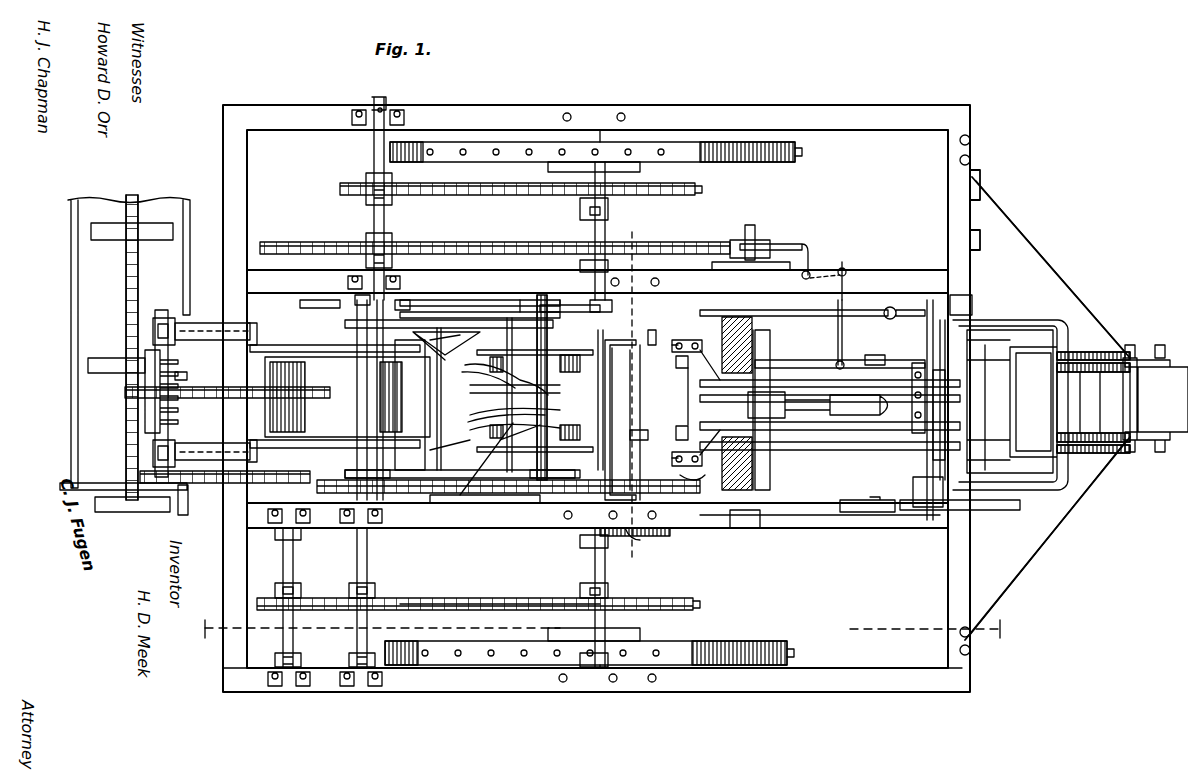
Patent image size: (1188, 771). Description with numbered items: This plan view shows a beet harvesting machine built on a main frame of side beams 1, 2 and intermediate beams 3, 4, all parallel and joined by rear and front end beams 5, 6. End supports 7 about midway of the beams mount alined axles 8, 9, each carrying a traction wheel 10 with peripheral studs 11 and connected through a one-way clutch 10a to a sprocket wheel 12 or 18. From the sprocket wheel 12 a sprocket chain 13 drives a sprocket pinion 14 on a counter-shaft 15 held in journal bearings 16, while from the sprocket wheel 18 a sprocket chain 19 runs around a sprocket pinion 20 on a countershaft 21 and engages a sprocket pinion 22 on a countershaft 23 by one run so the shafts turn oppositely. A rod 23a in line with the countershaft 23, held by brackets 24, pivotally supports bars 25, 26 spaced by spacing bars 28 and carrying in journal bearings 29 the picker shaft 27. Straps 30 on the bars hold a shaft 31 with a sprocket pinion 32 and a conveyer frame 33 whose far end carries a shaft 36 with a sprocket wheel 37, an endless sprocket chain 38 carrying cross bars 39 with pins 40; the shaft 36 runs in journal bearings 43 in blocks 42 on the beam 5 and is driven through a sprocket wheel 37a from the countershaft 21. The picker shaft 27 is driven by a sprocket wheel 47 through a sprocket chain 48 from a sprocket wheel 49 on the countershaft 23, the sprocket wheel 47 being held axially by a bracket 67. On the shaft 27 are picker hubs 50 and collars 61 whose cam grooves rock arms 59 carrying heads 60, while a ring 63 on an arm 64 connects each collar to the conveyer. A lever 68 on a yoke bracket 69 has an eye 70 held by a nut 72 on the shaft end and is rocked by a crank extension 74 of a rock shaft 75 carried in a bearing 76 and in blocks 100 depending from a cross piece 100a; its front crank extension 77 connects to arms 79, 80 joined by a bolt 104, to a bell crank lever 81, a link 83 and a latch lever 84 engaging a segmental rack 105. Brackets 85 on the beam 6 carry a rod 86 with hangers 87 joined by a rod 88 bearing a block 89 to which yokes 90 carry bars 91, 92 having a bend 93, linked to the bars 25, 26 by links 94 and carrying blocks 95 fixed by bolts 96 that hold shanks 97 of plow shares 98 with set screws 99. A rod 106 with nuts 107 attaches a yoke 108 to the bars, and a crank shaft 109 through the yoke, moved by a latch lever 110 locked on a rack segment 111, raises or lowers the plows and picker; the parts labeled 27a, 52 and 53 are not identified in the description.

The side beam 1 is at (858, 118).
The side beam 2 is at (860, 685).
The intermediate beam 3 is at (885, 280).
The intermediate beam 4 is at (845, 530).
The end beam 5 is at (232, 162).
The end beam 6 is at (962, 222).
The end support 7 is at (582, 262).
The axle 8 is at (590, 222).
The axle 9 is at (592, 562).
The traction wheel 10 is at (748, 162).
The one-way clutch 10a is at (612, 160).
The peripheral stud 11 is at (800, 152).
The sprocket wheel 12 is at (700, 190).
The sprocket chain 13 is at (495, 240).
The sprocket pinion 14 is at (338, 190).
The counter-shaft 15 is at (375, 157).
The journal bearing 16 is at (380, 115).
The sprocket wheel 18 is at (698, 600).
The sprocket chain 19 is at (465, 610).
The sprocket pinion 20 is at (255, 602).
The countershaft 21 is at (292, 646).
The sprocket pinion 22 is at (376, 595).
The countershaft 23 is at (362, 632).
The rod 23a is at (360, 345).
The bracket 24 is at (340, 530).
The bar 25 is at (345, 325).
The bar 26 is at (352, 468).
The picker shaft 27 is at (540, 500).
The bearing block 27a is at (285, 510).
The spacing bar 28 is at (362, 340).
The journal bearing 29 is at (560, 310).
The strap 30 is at (435, 336).
The shaft 31 is at (430, 360).
The sprocket pinion 32 is at (435, 425).
The conveyer frame 33 is at (268, 328).
The shaft 36 is at (162, 312).
The sprocket wheel 37 is at (125, 395).
The sprocket wheel 37a is at (170, 495).
The endless sprocket chain 38 is at (340, 400).
The cross bar 39 is at (340, 362).
The pin 40 is at (290, 445).
The block 42 is at (212, 328).
The journal bearing 43 is at (153, 330).
The sprocket wheel 47 is at (575, 488).
The sprocket chain 48 is at (440, 505).
The sprocket wheel 49 is at (348, 470).
The hub 50 is at (570, 330).
The finger 52 is at (480, 430).
The finger 53 is at (510, 428).
The arm 59 is at (560, 390).
The head 60 is at (505, 408).
The collar 61 is at (480, 362).
The ring 63 is at (560, 405).
The arm 64 is at (505, 390).
The bracket 67 is at (528, 500).
The lever 68 is at (492, 310).
The yoke bracket 69 is at (455, 312).
The eye 70 is at (600, 305).
The nut 72 is at (558, 302).
The crank extension 74 is at (352, 290).
The rock shaft 75 is at (522, 300).
The bearing 76 is at (398, 255).
The crank extension 77 is at (830, 310).
The arm 79 is at (835, 322).
The arm 80 is at (843, 322).
The bell crank lever 81 is at (808, 262).
The link 83 is at (788, 248).
The latch lever 84 is at (735, 250).
The bracket 85 is at (950, 300).
The rod 86 is at (928, 290).
The hanger 87 is at (900, 530).
The rod 88 is at (918, 398).
The block 89 is at (933, 440).
The yoke 90 is at (930, 400).
The bar 91 is at (795, 370).
The bar 92 is at (795, 440).
The bend 93 is at (748, 405).
The link 94 is at (520, 322).
The block 95 is at (680, 362).
The bolt 96 is at (686, 338).
The shank 97 is at (685, 385).
The plow share 98 is at (705, 470).
The set screw 99 is at (705, 400).
The block 100 is at (728, 395).
The cross piece 100a is at (745, 528).
The bolt 104 is at (870, 355).
The segmental rack 105 is at (752, 240).
The rod 106 is at (655, 330).
The nut 107 is at (672, 345).
The yoke 108 is at (652, 420).
The crank shaft 109 is at (626, 392).
The latch lever 110 is at (640, 540).
The rack segment 111 is at (672, 534).